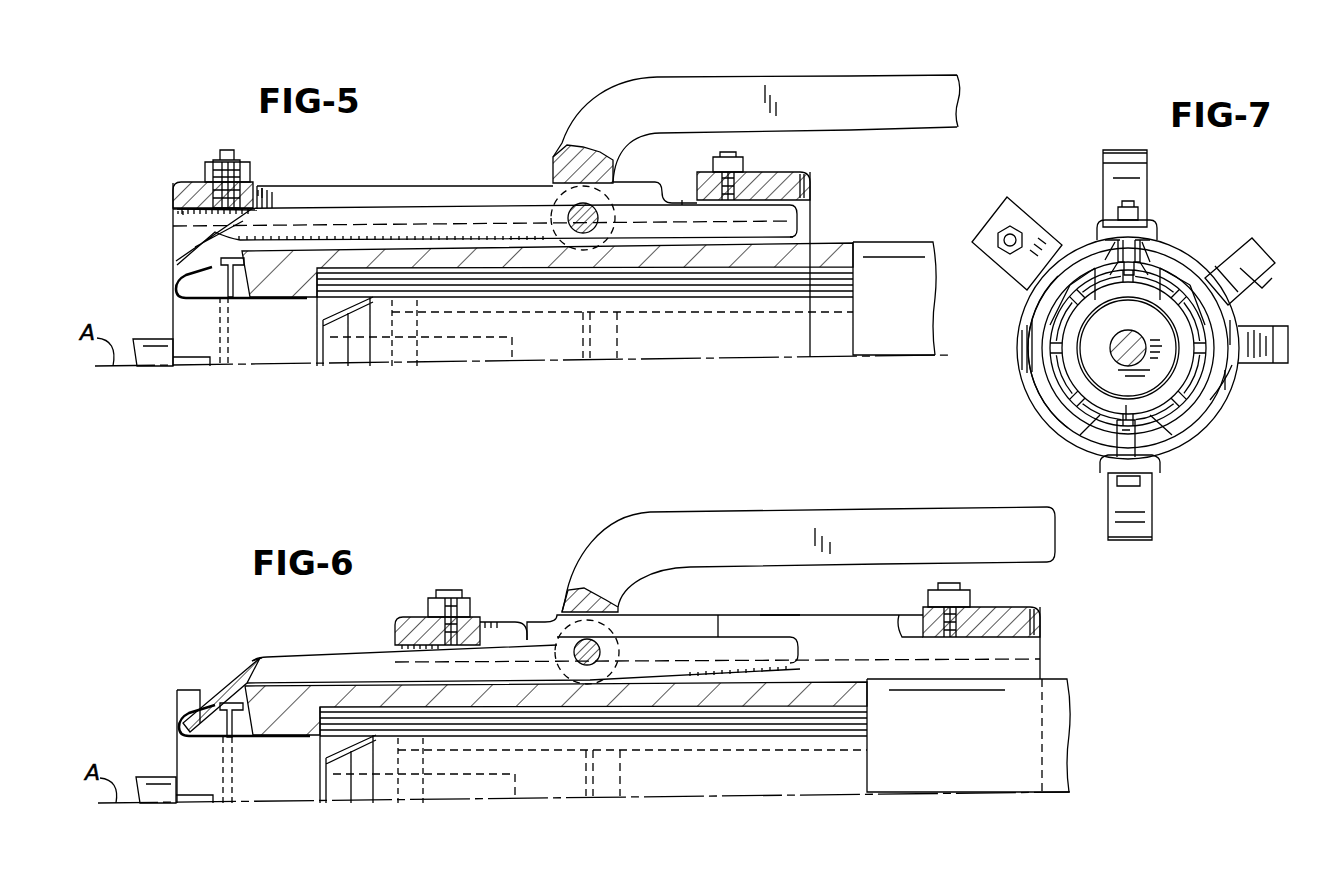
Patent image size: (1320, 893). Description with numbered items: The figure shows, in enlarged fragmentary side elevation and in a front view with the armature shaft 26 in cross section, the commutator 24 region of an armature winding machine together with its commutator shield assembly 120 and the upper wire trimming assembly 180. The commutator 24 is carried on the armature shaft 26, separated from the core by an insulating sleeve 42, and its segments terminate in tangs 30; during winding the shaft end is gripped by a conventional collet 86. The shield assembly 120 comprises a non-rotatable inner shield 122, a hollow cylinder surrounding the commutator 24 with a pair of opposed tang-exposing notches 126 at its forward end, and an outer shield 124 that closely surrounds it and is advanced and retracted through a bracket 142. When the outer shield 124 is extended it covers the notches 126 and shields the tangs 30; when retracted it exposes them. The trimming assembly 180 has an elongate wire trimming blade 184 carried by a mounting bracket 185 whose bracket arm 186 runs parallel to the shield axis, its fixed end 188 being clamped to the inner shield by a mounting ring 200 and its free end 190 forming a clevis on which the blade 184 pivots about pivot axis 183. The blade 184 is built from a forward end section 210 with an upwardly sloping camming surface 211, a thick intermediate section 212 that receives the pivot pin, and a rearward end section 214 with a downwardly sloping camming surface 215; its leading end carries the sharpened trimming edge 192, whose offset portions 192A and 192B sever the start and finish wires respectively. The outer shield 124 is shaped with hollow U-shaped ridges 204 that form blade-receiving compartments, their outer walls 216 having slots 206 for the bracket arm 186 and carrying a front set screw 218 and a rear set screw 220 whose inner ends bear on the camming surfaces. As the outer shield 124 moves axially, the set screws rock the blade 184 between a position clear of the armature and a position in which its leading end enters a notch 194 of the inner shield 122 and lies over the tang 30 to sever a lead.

In FIG. 5, the commutator 24 is at (272, 356).
In FIG. 6, the commutator 24 is at (274, 778).
In FIG. 7, the commutator 24 is at (1098, 360).
In FIG. 5, the armature shaft 26 is at (468, 352).
In FIG. 6, the armature shaft 26 is at (478, 792).
In FIG. 7, the armature shaft 26 is at (1132, 332).
In FIG. 5, the tangs 30 is at (178, 282).
In FIG. 6, the tangs 30 is at (180, 720).
In FIG. 7, the tangs 30 is at (1080, 258).
In FIG. 5, the insulating sleeve 42 is at (152, 339).
In FIG. 6, the insulating sleeve 42 is at (152, 777).
In FIG. 5, the collet 86 is at (343, 355).
In FIG. 6, the collet 86 is at (340, 793).
In FIG. 5, the commutator shield assembly 120 is at (891, 251).
In FIG. 6, the commutator shield assembly 120 is at (1009, 699).
In FIG. 7, the commutator shield assembly 120 is at (1088, 348).
In FIG. 5, the inner shield 122 is at (905, 245).
In FIG. 6, the inner shield 122 is at (996, 732).
In FIG. 7, the inner shield 122 is at (1045, 418).
In FIG. 5, the outer shield 124 is at (812, 222).
In FIG. 6, the outer shield 124 is at (1043, 668).
In FIG. 7, the outer shield 124 is at (1030, 400).
In FIG. 7, the tang-exposing notches 126 is at (1018, 312).
In FIG. 7, the bracket 142 is at (1232, 365).
In FIG. 5, the upper wire trimming assembly 180 is at (495, 128).
In FIG. 6, the upper wire trimming assembly 180 is at (505, 568).
In FIG. 5, the pivot axis 183 is at (556, 176).
In FIG. 6, the pivot axis 183 is at (630, 615).
In FIG. 5, the wire trimming blade 184 is at (385, 203).
In FIG. 6, the wire trimming blade 184 is at (368, 648).
In FIG. 7, the wire trimming blade 184 is at (1112, 240).
In FIG. 5, the mounting bracket 185 is at (756, 95).
In FIG. 6, the mounting bracket 185 is at (808, 535).
In FIG. 7, the mounting bracket 185 is at (1130, 325).
In FIG. 5, the bracket arm 186 is at (812, 76).
In FIG. 6, the bracket arm 186 is at (848, 509).
In FIG. 7, the bracket arm 186 is at (1104, 142).
In FIG. 5, the fixed end 188 is at (920, 75).
In FIG. 6, the fixed end 188 is at (966, 508).
In FIG. 5, the free end 190 is at (598, 92).
In FIG. 6, the free end 190 is at (596, 545).
In FIG. 7, the free end 190 is at (1103, 160).
In FIG. 5, the trimming edge 192 is at (174, 262).
In FIG. 6, the trimming edge 192 is at (180, 723).
In FIG. 7, the start wire trimming portion 192A is at (1152, 240).
In FIG. 7, the finish wire trimming portion 192B is at (1103, 235).
In FIG. 5, the notches 194 is at (243, 297).
In FIG. 6, the notches 194 is at (238, 700).
In FIG. 7, the notches 194 is at (1165, 255).
In FIG. 7, the mounting ring 200 is at (1246, 236).
In FIG. 5, the ridges 204 is at (172, 222).
In FIG. 6, the ridges 204 is at (887, 634).
In FIG. 5, the slots 206 is at (338, 186).
In FIG. 6, the slots 206 is at (840, 615).
In FIG. 5, the forward end section 210 is at (283, 188).
In FIG. 6, the forward end section 210 is at (298, 655).
In FIG. 5, the camming surface 211 is at (360, 186).
In FIG. 6, the camming surface 211 is at (272, 654).
In FIG. 5, the intermediate section 212 is at (638, 186).
In FIG. 6, the intermediate section 212 is at (540, 632).
In FIG. 5, the rearward end section 214 is at (780, 184).
In FIG. 6, the rearward end section 214 is at (768, 615).
In FIG. 5, the camming surface 215 is at (682, 200).
In FIG. 6, the camming surface 215 is at (719, 633).
In FIG. 5, the outer walls 216 is at (173, 190).
In FIG. 6, the outer walls 216 is at (410, 617).
In FIG. 7, the outer walls 216 is at (1148, 210).
In FIG. 5, the front set screw 218 is at (226, 150).
In FIG. 6, the front set screw 218 is at (450, 590).
In FIG. 7, the front set screw 218 is at (1132, 200).
In FIG. 5, the rear set screw 220 is at (728, 152).
In FIG. 6, the rear set screw 220 is at (950, 583).